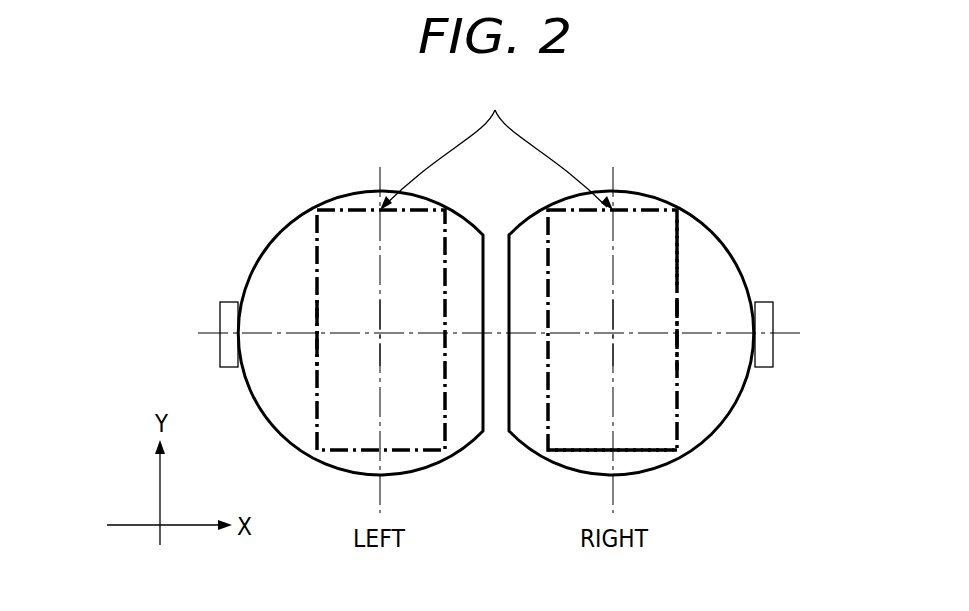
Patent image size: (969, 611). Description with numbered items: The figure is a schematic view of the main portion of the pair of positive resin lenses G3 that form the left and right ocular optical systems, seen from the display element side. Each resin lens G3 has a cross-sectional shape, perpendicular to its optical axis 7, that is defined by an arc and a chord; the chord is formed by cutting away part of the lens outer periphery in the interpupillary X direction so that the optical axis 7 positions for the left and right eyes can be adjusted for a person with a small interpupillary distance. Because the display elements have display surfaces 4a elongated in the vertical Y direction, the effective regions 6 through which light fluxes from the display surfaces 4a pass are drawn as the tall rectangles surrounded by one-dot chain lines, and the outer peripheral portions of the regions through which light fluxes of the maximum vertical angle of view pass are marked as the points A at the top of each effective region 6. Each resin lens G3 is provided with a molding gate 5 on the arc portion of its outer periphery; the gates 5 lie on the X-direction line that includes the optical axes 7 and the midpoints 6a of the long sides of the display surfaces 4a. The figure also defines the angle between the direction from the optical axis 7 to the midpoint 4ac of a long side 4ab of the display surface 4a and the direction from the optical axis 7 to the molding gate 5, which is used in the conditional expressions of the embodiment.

The resin lens G3 is at (282, 175).
The effective region 6 is at (345, 225).
The midpoint of the long side of the display surface 6a is at (317, 333).
The optical axis 7 is at (378, 335).
The molding gate 5 is at (227, 322).
The long side of the display surface 4ab is at (678, 253).
The midpoint of the long side 4ac is at (678, 337).
The display surface 4a is at (653, 433).
The point of maximum vertical angle of view A is at (496, 146).